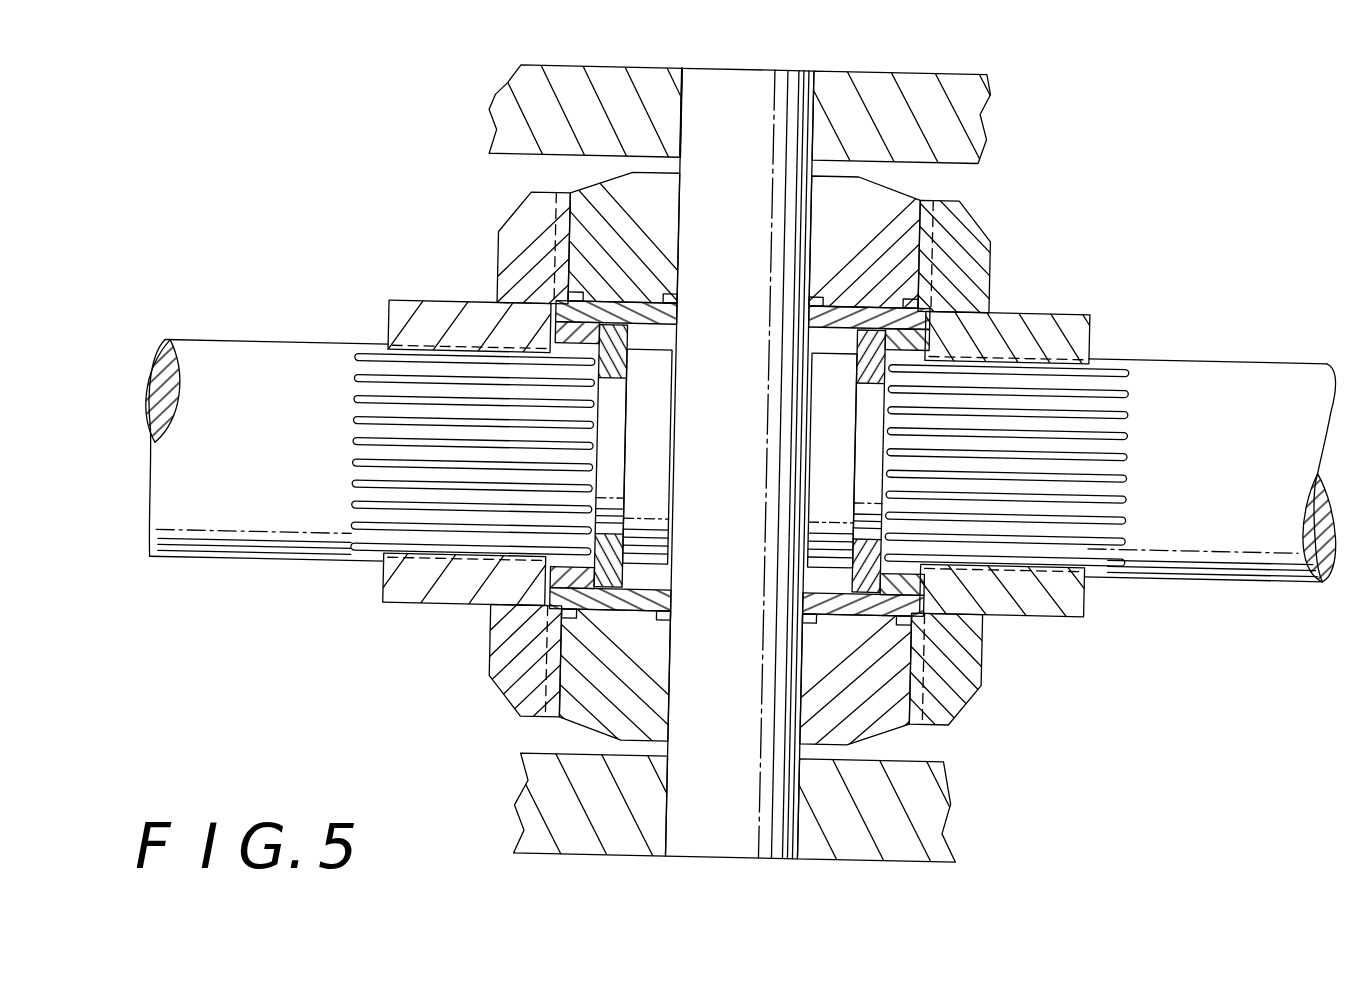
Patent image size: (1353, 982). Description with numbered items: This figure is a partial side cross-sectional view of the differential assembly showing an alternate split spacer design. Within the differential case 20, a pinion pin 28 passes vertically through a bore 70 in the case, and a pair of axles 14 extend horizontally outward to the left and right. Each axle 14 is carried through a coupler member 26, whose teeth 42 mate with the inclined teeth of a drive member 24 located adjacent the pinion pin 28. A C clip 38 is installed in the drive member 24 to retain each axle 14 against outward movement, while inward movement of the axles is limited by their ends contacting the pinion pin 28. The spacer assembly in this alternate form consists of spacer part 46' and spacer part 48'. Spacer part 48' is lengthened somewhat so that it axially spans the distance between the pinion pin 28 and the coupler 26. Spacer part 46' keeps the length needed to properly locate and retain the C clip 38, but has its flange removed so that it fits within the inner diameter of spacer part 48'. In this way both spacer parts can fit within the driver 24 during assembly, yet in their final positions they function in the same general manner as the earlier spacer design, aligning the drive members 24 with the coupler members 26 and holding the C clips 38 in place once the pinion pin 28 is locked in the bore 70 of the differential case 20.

The axle 14 is at (237, 347).
The differential case 20 is at (977, 93).
The drive member 24 is at (592, 200).
The coupler member 26 is at (512, 240).
The pinion pin 28 is at (755, 78).
The C clip 38 is at (637, 575).
The teeth 42 is at (972, 220).
The spacer part 46' is at (722, 618).
The spacer part 48' is at (729, 537).
The bore 70 is at (680, 100).